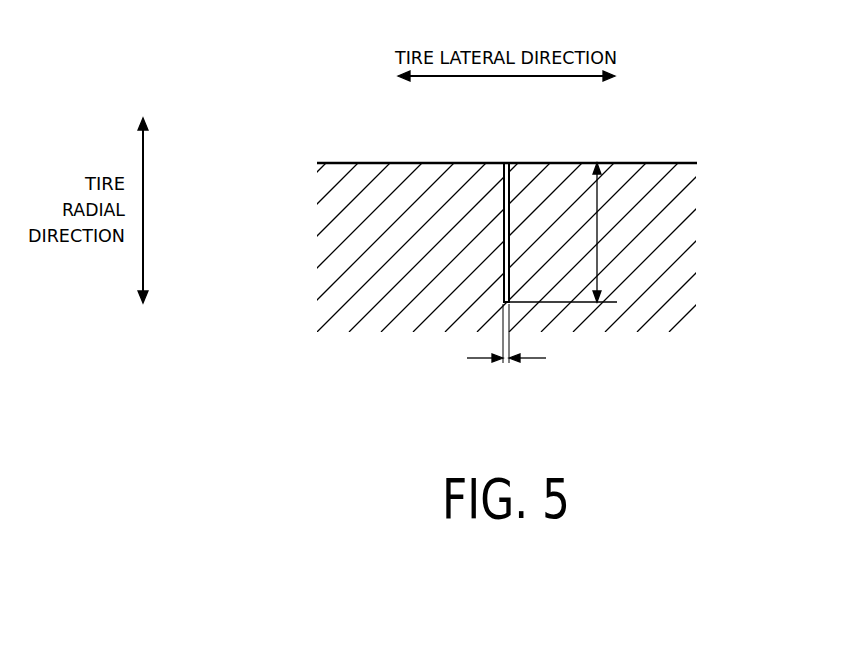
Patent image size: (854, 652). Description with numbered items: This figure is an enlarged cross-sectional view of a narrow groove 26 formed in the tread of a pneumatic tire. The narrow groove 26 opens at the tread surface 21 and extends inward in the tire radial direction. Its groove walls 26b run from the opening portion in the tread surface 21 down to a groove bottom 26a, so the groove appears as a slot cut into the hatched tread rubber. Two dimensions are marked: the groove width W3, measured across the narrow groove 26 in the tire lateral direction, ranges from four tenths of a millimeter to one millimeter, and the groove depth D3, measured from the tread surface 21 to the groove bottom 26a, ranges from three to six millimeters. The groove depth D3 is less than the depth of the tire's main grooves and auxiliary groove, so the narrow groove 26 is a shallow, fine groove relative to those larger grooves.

The tread surface 21 is at (667, 152).
The narrow groove 26 is at (511, 196).
The groove bottom 26a is at (503, 302).
The groove walls 26b is at (508, 257).
The groove depth D3 is at (598, 230).
The groove width W3 is at (506, 348).